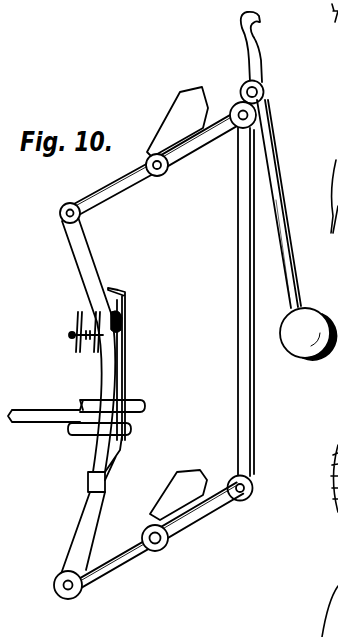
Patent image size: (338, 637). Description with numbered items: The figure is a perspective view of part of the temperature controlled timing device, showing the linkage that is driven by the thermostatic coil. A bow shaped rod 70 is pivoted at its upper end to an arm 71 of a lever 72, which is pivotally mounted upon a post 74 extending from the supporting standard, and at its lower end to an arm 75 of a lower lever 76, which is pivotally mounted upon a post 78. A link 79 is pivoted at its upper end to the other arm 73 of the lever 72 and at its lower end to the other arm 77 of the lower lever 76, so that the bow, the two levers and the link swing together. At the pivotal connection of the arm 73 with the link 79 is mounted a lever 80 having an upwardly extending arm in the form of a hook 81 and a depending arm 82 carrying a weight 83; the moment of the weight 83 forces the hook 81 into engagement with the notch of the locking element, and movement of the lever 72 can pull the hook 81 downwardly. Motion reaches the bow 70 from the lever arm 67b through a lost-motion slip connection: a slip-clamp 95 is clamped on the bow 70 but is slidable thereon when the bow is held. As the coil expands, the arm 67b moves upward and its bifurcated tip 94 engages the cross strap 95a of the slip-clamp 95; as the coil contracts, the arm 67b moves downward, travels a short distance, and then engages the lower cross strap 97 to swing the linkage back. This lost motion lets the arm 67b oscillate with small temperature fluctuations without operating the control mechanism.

The lever arm 67b is at (38, 420).
The bow shaped rod 70 is at (92, 283).
The arm 71 is at (97, 190).
The lever 72 is at (161, 185).
The arm 73 is at (215, 134).
The post 74 is at (152, 140).
The arm 75 is at (119, 565).
The lower lever 76 is at (192, 524).
The arm 77 is at (220, 506).
The post 78 is at (183, 490).
The link 79 is at (240, 326).
The lever 80 is at (283, 188).
The hook 81 is at (259, 53).
The depending arm 82 is at (294, 275).
The weight 83 is at (308, 334).
The bifurcated tip 94 is at (145, 406).
The slip-clamp 95 is at (125, 362).
The cross strap 95a is at (80, 323).
The lower cross strap 97 is at (88, 484).